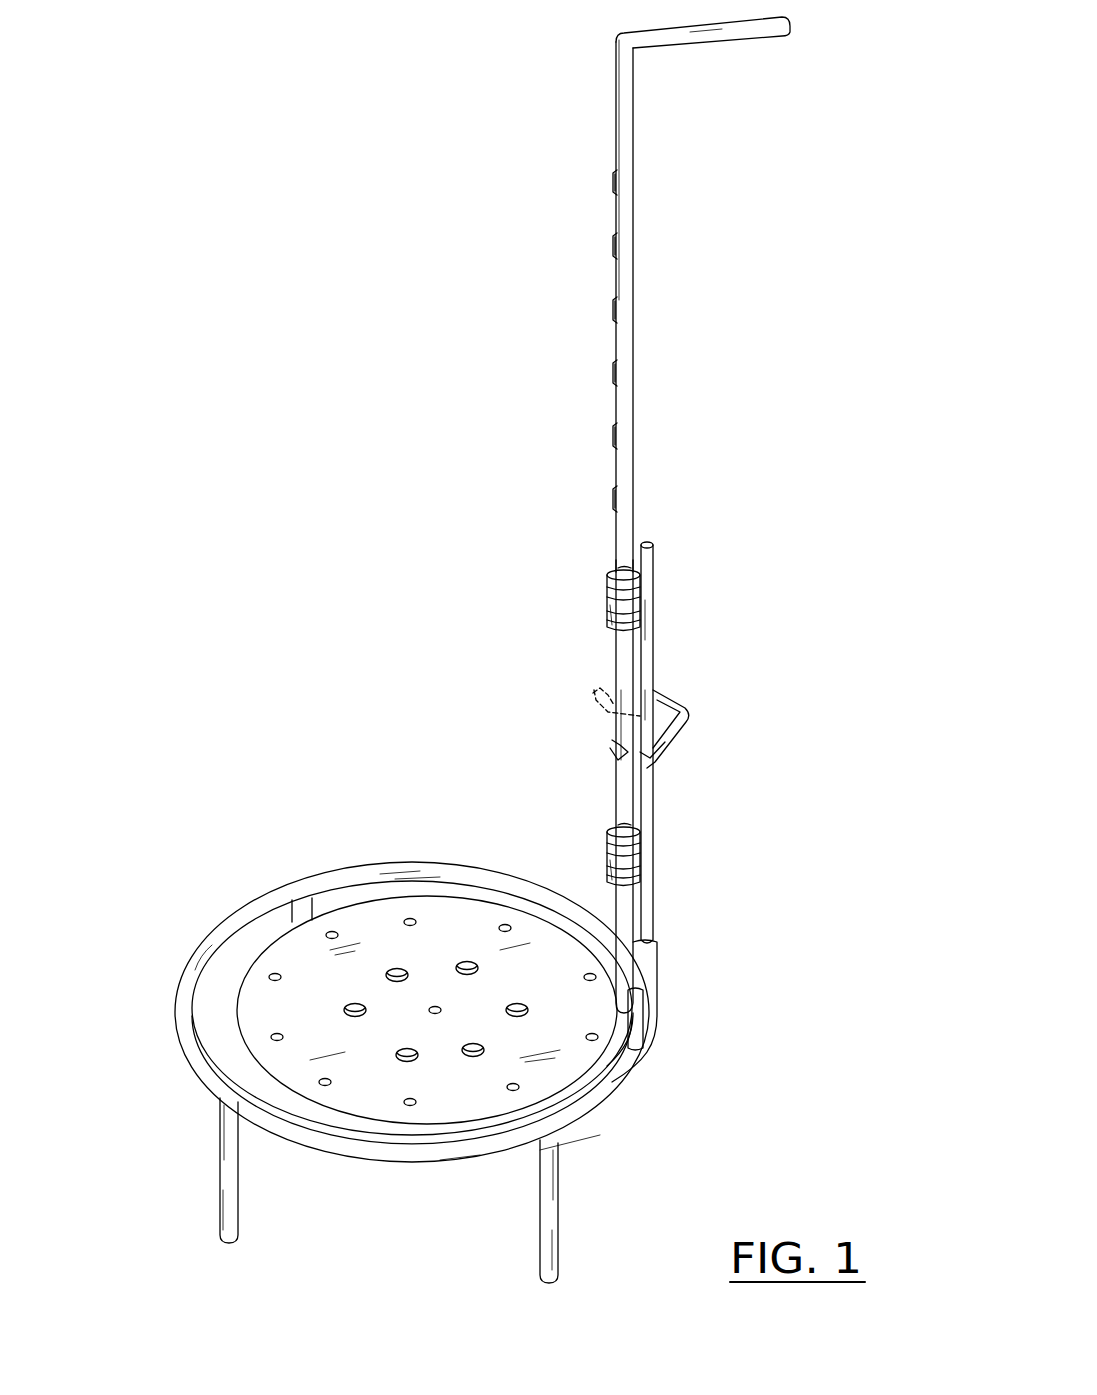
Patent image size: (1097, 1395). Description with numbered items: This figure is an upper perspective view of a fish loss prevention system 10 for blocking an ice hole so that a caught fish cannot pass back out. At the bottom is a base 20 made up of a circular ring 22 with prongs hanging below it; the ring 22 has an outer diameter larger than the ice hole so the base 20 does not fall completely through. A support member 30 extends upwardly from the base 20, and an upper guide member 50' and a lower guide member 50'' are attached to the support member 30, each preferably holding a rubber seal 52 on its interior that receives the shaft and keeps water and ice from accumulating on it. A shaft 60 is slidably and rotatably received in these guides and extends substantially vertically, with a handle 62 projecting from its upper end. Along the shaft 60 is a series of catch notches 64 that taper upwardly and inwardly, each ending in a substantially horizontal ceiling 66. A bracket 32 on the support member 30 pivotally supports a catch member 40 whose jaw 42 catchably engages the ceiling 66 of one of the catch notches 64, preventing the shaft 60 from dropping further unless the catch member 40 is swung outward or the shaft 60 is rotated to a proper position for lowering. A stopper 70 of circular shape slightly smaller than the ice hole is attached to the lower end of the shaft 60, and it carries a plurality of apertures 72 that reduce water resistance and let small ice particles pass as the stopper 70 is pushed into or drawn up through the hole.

The fish loss prevention system 10 is at (190, 108).
The base 20 is at (278, 885).
The ring 22 is at (387, 868).
The support member 30 is at (650, 588).
The bracket 32 is at (660, 682).
The catch member 40 is at (672, 720).
The jaw 42 is at (612, 745).
The upper guide member 50' is at (556, 595).
The lower guide member 50'' is at (551, 851).
The rubber seal 52 is at (614, 628).
The shaft 60 is at (630, 340).
The handle 62 is at (675, 37).
The catch notches 64 is at (614, 305).
The ceiling 66 is at (614, 176).
The stopper 70 is at (585, 1072).
The apertures 72 is at (266, 1036).